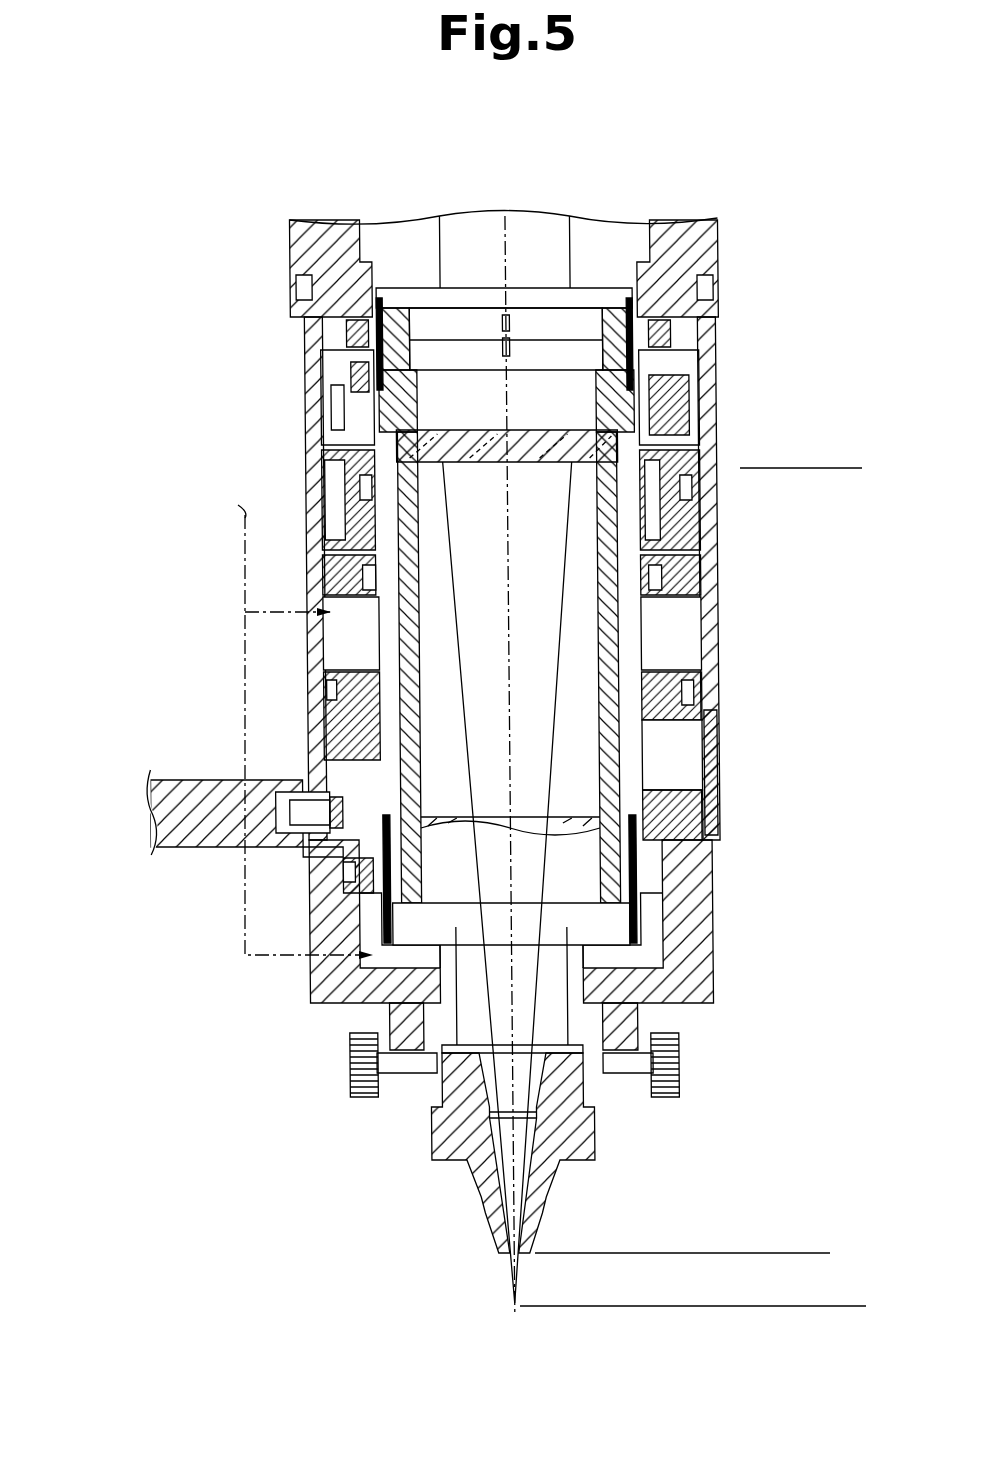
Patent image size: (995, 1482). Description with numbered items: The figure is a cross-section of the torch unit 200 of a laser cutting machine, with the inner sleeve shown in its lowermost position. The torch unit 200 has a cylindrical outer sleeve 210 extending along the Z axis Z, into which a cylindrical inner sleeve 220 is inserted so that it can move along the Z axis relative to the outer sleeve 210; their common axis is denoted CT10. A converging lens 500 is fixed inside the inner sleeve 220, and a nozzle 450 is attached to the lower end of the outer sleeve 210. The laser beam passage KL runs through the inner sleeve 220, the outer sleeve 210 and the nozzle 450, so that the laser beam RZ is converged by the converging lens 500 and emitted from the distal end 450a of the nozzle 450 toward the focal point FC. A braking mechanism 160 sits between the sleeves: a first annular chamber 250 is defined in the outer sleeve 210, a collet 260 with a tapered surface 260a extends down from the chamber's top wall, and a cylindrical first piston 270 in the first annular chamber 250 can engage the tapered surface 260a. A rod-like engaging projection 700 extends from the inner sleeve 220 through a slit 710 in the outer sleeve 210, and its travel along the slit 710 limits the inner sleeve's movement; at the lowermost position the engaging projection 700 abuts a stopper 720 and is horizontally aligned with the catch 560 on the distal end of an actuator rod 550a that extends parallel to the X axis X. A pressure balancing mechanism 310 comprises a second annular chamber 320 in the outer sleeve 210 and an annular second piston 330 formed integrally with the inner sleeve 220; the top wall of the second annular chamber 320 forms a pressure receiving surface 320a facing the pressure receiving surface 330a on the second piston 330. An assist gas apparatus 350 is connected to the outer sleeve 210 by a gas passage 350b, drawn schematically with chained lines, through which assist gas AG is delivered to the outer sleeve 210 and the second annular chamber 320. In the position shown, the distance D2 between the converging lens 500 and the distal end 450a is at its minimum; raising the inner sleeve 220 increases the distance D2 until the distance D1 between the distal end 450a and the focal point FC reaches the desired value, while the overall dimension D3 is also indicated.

The braking mechanism 160 is at (356, 380).
The axis of the outer and inner sleeves CT10 is at (510, 392).
The laser beam RZ is at (574, 230).
The first annular chamber 250 is at (662, 378).
The outer sleeve 210 is at (718, 340).
The torch unit 200 is at (270, 373).
The collet 260 is at (652, 400).
The tapered surface 260a is at (666, 482).
The first piston 270 is at (322, 490).
The assist gas apparatus 350 is at (245, 540).
The gas passage 350b is at (245, 935).
The laser beam passage KL is at (494, 517).
The converging lens 500 is at (546, 426).
The pressure balancing mechanism 310 is at (668, 594).
The pressure receiving surface 320a is at (700, 600).
The second annular chamber 320 is at (665, 658).
The pressure receiving surface 330a is at (700, 670).
The second piston 330 is at (666, 726).
The inner sleeve 220 is at (628, 736).
The slit 710 is at (316, 736).
The catch 560 is at (288, 790).
The engaging projection 700 is at (302, 860).
The stopper 720 is at (336, 872).
The rod 550a is at (150, 850).
The nozzle 450 is at (596, 1136).
The distal end of the nozzle 450a is at (507, 1255).
The focal point FC is at (513, 1305).
The assist gas AG is at (466, 860).
The distance between nozzle distal end and focal point D1 is at (680, 1222).
The distance between converging lens and nozzle distal end D2 is at (806, 470).
The distance D3 is at (852, 470).
The Z axis Z is at (85, 645).
The X axis X is at (230, 1112).